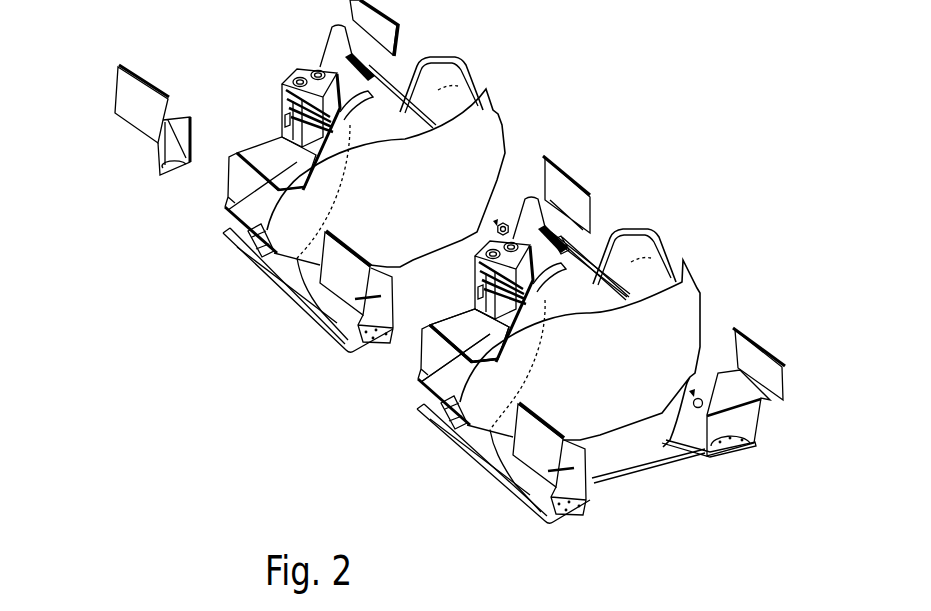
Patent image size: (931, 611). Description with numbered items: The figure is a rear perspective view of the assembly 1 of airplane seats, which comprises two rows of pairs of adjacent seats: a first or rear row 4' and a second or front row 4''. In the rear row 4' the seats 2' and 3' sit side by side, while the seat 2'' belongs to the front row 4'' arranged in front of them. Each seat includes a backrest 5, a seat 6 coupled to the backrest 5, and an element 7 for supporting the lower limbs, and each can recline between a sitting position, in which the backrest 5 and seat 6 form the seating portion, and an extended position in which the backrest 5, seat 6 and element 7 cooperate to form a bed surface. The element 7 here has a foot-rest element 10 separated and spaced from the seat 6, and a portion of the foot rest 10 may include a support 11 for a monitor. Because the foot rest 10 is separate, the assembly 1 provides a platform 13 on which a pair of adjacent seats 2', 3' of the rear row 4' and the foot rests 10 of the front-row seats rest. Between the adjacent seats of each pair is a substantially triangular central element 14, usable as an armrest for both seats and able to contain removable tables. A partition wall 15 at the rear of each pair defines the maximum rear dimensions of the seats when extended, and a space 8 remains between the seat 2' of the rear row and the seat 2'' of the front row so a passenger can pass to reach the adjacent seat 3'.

The assembly of seats 1 is at (445, 285).
The seat 2' is at (422, 443).
The seat 2'' is at (249, 265).
The seat 3' is at (555, 276).
The first row 4' is at (577, 487).
The second row 4'' is at (272, 335).
The backrest 5 is at (450, 48).
The seat 6 is at (240, 190).
The element for supporting the lower limbs 7 is at (166, 198).
The space 8 is at (518, 211).
The foot-rest element 10 is at (171, 117).
The support 11 is at (123, 100).
The platform 13 is at (328, 307).
The central element 14 is at (287, 80).
The partition wall 15 is at (450, 83).